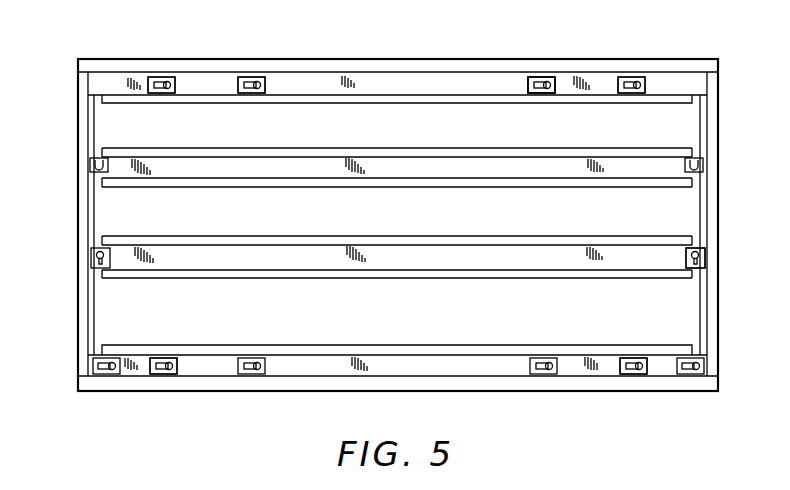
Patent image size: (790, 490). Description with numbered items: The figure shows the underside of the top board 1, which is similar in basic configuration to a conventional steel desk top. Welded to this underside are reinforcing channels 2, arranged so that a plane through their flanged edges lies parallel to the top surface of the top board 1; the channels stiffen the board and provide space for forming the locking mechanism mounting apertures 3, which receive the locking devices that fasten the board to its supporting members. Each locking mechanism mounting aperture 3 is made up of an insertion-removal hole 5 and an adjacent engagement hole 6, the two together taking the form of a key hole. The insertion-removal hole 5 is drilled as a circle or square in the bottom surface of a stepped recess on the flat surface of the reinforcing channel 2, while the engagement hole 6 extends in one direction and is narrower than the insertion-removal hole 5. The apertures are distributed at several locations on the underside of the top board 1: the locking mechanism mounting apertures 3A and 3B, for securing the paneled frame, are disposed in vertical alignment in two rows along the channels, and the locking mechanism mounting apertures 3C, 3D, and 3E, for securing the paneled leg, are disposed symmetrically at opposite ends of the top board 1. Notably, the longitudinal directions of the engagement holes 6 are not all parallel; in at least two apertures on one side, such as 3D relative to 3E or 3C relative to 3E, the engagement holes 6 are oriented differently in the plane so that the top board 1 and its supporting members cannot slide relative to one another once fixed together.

The top board 1 is at (346, 64).
The reinforcing channel 2 is at (326, 168).
The locking mechanism mounting aperture 3 is at (234, 79).
The locking mechanism mounting aperture 3A is at (249, 77).
The locking mechanism mounting aperture 3B is at (158, 77).
The locking mechanism mounting aperture 3C is at (90, 164).
The locking mechanism mounting aperture 3D is at (92, 258).
The locking mechanism mounting aperture 3E is at (91, 366).
The insertion-removal hole 5 is at (554, 77).
The engagement hole 6 is at (530, 77).